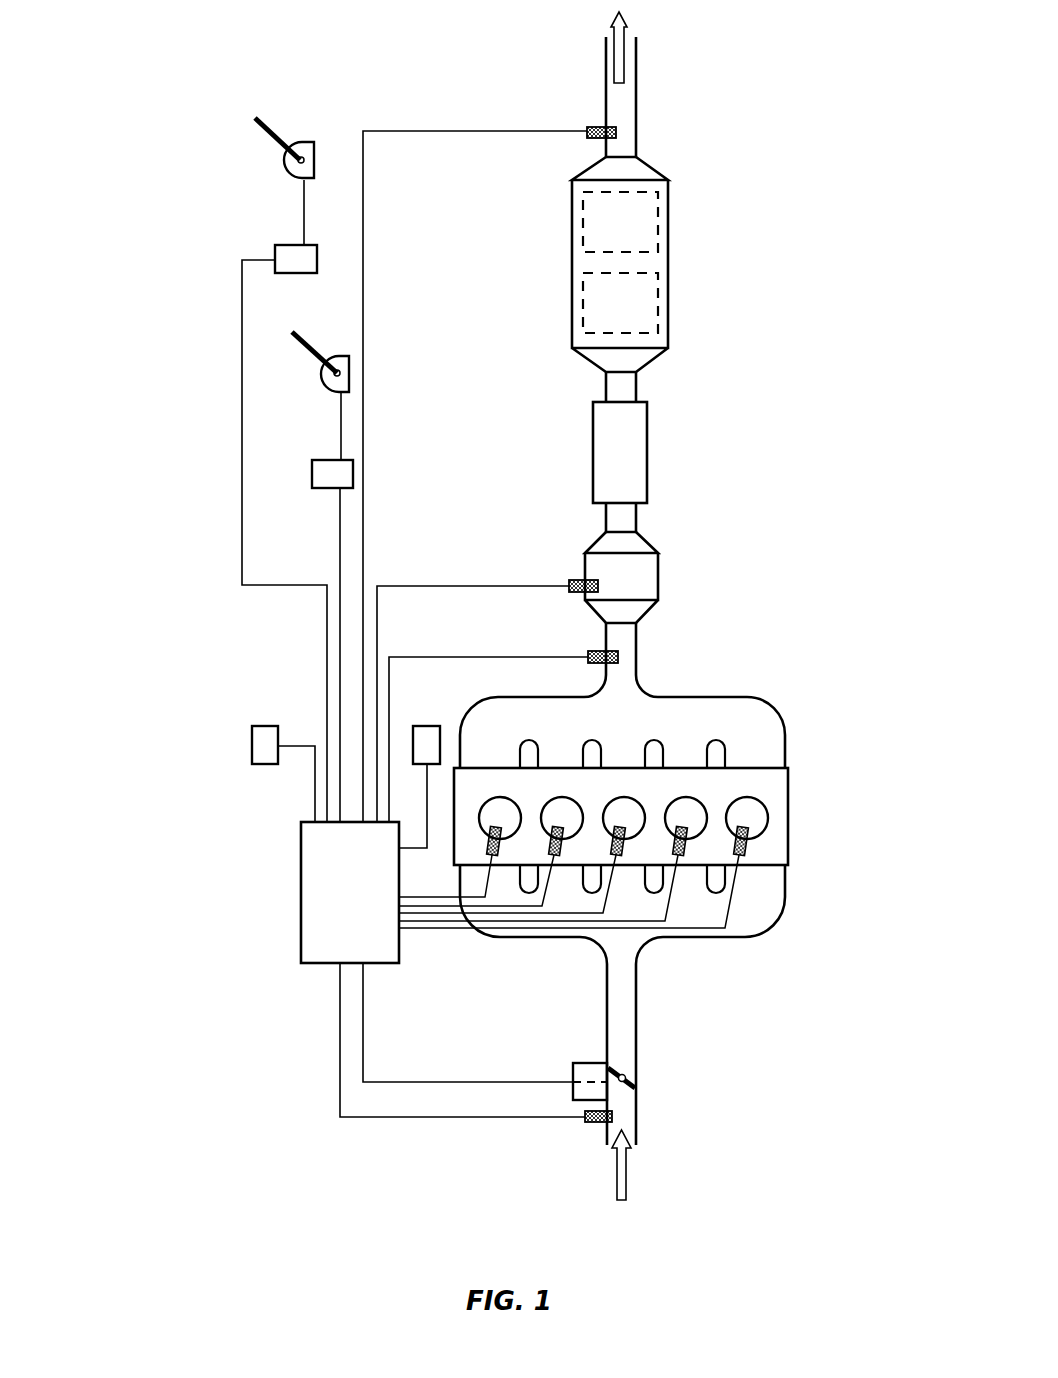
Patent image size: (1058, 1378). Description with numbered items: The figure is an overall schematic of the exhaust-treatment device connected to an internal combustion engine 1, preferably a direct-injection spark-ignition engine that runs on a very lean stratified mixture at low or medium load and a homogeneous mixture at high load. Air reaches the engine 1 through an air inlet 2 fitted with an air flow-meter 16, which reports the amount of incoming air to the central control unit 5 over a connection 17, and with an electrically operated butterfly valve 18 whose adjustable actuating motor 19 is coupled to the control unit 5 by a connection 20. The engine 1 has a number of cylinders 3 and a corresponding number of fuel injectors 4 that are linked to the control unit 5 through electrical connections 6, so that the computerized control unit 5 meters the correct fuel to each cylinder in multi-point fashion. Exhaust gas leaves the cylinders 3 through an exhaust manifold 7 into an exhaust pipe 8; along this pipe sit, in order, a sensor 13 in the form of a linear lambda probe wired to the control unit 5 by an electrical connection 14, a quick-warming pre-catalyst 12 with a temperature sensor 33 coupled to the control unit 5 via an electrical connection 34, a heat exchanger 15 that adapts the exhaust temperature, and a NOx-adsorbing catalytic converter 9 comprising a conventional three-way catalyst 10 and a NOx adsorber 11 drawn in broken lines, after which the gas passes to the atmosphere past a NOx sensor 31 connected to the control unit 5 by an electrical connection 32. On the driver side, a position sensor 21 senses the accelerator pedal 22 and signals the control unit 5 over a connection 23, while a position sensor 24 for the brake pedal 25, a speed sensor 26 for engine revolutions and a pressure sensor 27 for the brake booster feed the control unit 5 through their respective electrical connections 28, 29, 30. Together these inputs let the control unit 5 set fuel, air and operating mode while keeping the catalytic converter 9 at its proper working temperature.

The internal combustion engine 1 is at (783, 776).
The air inlet 2 is at (627, 995).
The cylinders 3 is at (757, 816).
The fuel injectors 4 is at (748, 845).
The central control unit 5 is at (320, 960).
The electrical connections 6 is at (735, 880).
The exhaust manifold 7 is at (752, 710).
The exhaust pipe 8 is at (630, 665).
The NOx-adsorbing catalytic converter 9 is at (640, 355).
The three-way catalyst 10 is at (660, 213).
The NOx adsorber 11 is at (660, 305).
The pre-catalyst 12 is at (655, 578).
The sensor 13 is at (590, 651).
The electrical connection 14 is at (500, 657).
The heat exchanger 15 is at (648, 445).
The air flow-meter 16 is at (590, 1124).
The connection 17 is at (445, 1117).
The butterfly valve 18 is at (636, 1083).
The actuating motor 19 is at (576, 1065).
The connection 20 is at (445, 1082).
The position sensor 21 is at (320, 475).
The accelerator pedal 22 is at (322, 363).
The connection 23 is at (340, 540).
The position sensor 24 is at (275, 252).
The brake pedal 25 is at (278, 130).
The speed sensor 26 is at (422, 745).
The pressure sensor 27 is at (250, 758).
The electrical connection 28 is at (242, 455).
The electrical connection 29 is at (427, 810).
The electrical connection 30 is at (315, 790).
The NOx sensor 31 is at (592, 127).
The electrical connection 32 is at (490, 131).
The temperature sensor 33 is at (569, 580).
The electrical connection 34 is at (500, 586).